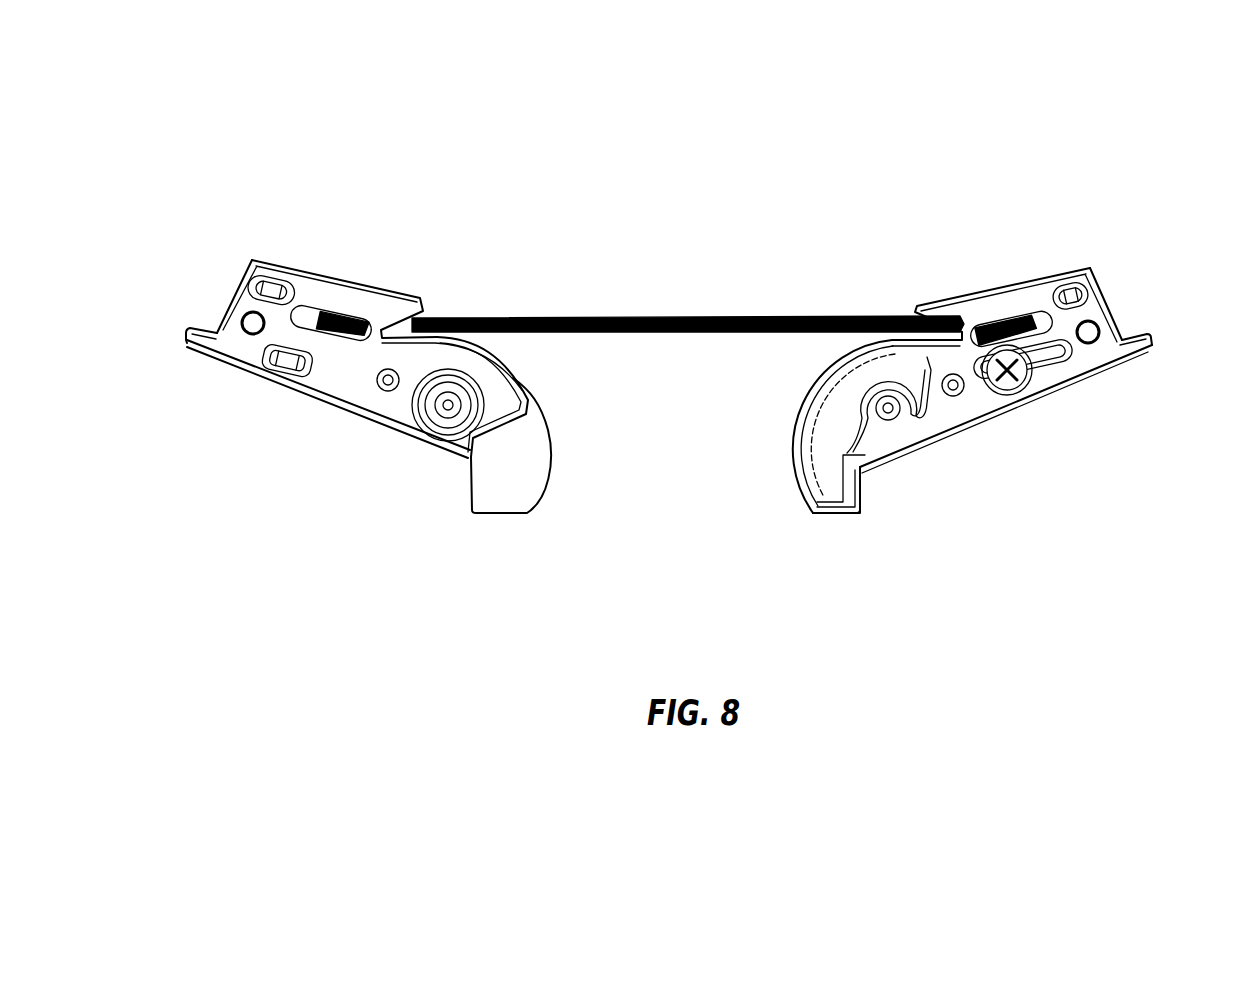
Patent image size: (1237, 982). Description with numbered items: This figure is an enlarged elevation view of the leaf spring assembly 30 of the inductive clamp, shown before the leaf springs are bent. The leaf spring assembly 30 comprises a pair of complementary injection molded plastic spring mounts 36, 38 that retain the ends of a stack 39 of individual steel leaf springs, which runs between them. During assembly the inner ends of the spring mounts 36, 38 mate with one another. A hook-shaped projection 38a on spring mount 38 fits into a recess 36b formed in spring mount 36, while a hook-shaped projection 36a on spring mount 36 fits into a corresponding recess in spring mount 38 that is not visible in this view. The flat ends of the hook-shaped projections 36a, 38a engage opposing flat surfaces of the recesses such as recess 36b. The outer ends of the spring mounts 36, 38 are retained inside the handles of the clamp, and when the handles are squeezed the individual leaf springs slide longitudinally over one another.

The leaf spring assembly 30 is at (800, 158).
The spring mount 36 is at (368, 423).
The hook-shaped projection 36a is at (550, 447).
The recess 36b is at (498, 493).
The spring mount 38 is at (980, 423).
The hook-shaped projection 38a is at (835, 517).
The stack of individual steel leaf springs 39 is at (558, 316).